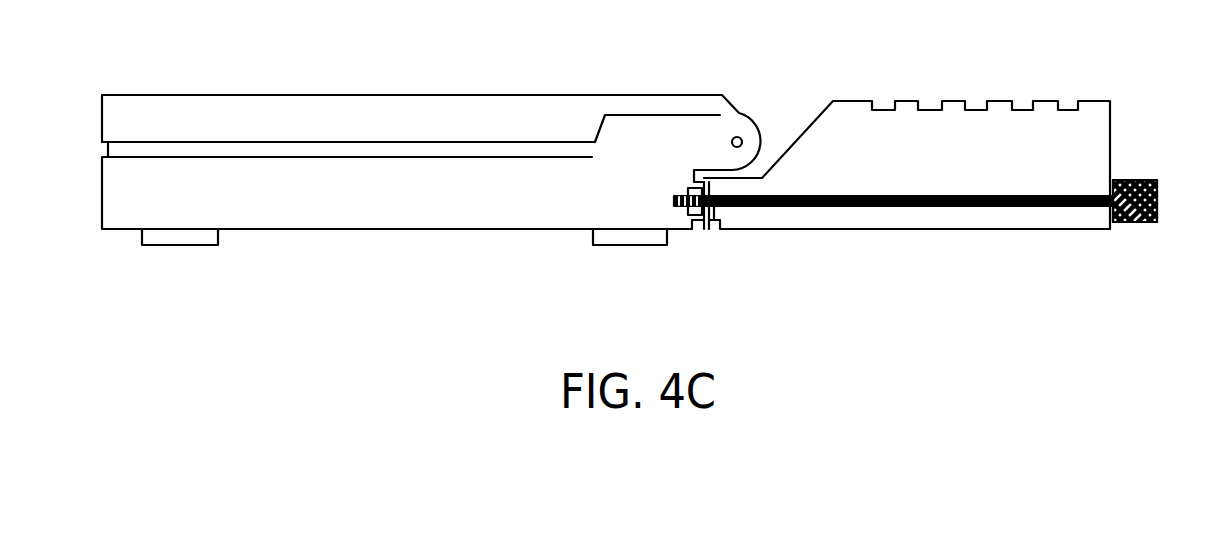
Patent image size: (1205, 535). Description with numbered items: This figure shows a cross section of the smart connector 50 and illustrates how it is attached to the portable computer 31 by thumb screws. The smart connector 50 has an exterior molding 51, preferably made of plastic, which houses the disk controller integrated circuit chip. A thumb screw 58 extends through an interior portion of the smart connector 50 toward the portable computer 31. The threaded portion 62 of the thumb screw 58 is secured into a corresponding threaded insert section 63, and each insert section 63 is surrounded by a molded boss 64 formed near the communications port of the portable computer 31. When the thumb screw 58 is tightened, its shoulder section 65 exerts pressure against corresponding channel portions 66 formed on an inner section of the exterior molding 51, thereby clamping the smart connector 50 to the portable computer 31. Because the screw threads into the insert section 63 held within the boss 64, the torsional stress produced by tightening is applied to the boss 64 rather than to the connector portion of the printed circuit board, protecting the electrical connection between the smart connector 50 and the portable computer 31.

The portable computer 31 is at (396, 84).
The smart connector 50 is at (960, 75).
The exterior molding 51 is at (907, 230).
The thumb screw 58 is at (1132, 180).
The threaded portion 62 is at (683, 198).
The threaded insert section 63 is at (688, 188).
The molded boss 64 is at (703, 222).
The shoulder section 65 is at (715, 208).
The channel portion 66 is at (711, 218).